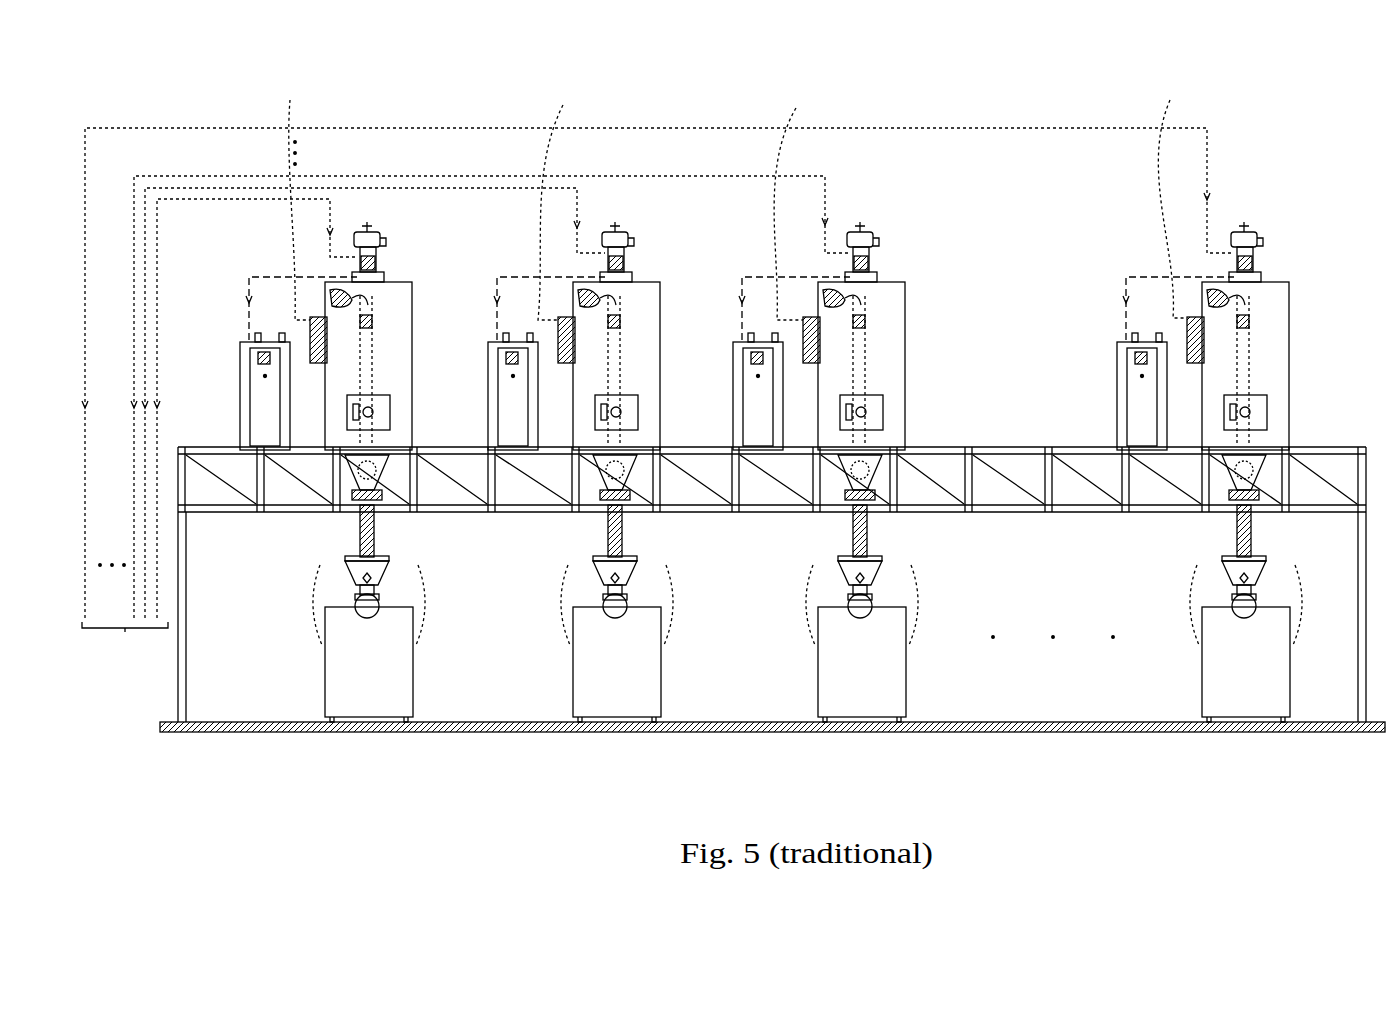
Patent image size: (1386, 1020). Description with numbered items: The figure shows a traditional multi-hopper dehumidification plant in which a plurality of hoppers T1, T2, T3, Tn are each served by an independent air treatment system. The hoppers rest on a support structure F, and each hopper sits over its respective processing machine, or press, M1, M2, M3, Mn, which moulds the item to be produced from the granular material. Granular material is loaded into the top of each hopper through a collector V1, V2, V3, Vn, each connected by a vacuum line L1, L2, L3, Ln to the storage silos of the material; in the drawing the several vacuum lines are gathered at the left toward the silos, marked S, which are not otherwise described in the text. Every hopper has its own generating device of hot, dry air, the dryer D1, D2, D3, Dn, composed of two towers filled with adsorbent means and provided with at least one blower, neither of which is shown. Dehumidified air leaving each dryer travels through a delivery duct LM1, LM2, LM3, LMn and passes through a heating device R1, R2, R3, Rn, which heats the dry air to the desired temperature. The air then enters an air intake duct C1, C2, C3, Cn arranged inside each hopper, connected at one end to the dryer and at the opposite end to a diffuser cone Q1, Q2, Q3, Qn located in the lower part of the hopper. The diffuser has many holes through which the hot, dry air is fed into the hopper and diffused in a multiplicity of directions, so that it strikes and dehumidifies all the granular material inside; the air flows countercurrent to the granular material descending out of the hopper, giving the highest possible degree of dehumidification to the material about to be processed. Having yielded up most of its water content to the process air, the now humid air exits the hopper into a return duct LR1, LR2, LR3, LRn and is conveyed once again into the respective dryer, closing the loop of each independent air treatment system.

The vacuum line L1 is at (200, 199).
The vacuum line L2 is at (440, 188).
The vacuum line L3 is at (665, 176).
The vacuum line Ln is at (1000, 108).
The delivery duct LM1 is at (310, 199).
The delivery duct LM2 is at (576, 203).
The delivery duct LM3 is at (799, 204).
The delivery duct LMn is at (1177, 200).
The return duct LR1 is at (249, 291).
The return duct LR2 is at (497, 290).
The return duct LR3 is at (745, 290).
The return duct LRn is at (1126, 290).
The collector V1 is at (370, 240).
The collector V2 is at (622, 240).
The collector V3 is at (868, 235).
The collector Vn is at (1250, 235).
The hopper T1 is at (412, 305).
The hopper T2 is at (655, 305).
The hopper T3 is at (900, 305).
The hopper Tn is at (1285, 320).
The air intake duct C1 is at (372, 348).
The air intake duct C2 is at (620, 358).
The air intake duct C3 is at (866, 355).
The air intake duct Cn is at (1248, 365).
The dryer D1 is at (240, 392).
The dryer D2 is at (488, 395).
The dryer D3 is at (733, 400).
The dryer Dn is at (1117, 385).
The heating device R1 is at (318, 363).
The heating device R2 is at (565, 363).
The heating device R3 is at (811, 363).
The heating device Rn is at (1197, 365).
The diffuser cone Q1 is at (352, 468).
The diffuser cone Q2 is at (600, 470).
The diffuser cone Q3 is at (848, 470).
The diffuser cone Qn is at (1228, 472).
The processing machine M1 is at (369, 643).
The processing machine M2 is at (617, 643).
The processing machine M3 is at (862, 643).
The processing machine Mn is at (1246, 643).
The material sources S is at (125, 642).
The support structure F is at (1370, 644).